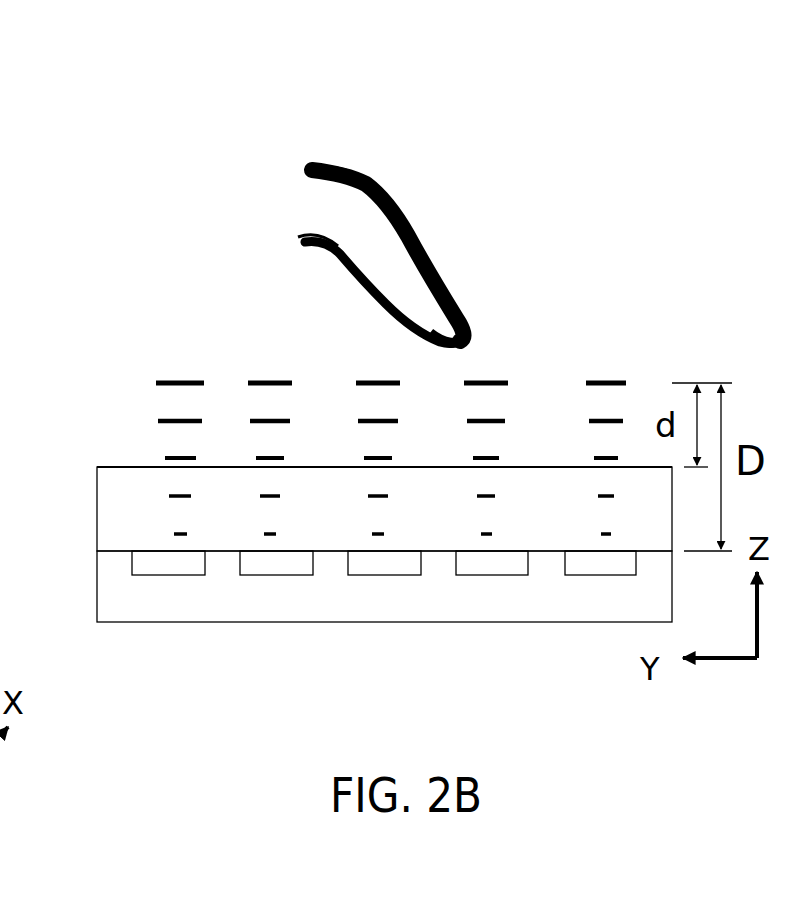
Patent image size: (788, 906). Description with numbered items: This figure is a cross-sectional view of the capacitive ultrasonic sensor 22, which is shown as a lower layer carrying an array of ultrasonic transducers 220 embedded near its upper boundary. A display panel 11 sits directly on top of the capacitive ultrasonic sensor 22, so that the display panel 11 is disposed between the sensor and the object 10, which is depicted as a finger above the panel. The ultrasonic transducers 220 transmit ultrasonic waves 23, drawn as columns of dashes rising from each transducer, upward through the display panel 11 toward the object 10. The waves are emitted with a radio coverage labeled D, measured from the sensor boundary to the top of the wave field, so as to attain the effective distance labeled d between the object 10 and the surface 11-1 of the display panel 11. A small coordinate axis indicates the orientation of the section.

The object 10 is at (368, 180).
The ultrasonic waves 23 is at (128, 394).
The display panel 11 is at (97, 503).
The surface of the display panel 11-1 is at (120, 466).
The capacitive ultrasonic sensor 22 is at (97, 600).
The ultrasonic transducers 220 is at (505, 575).